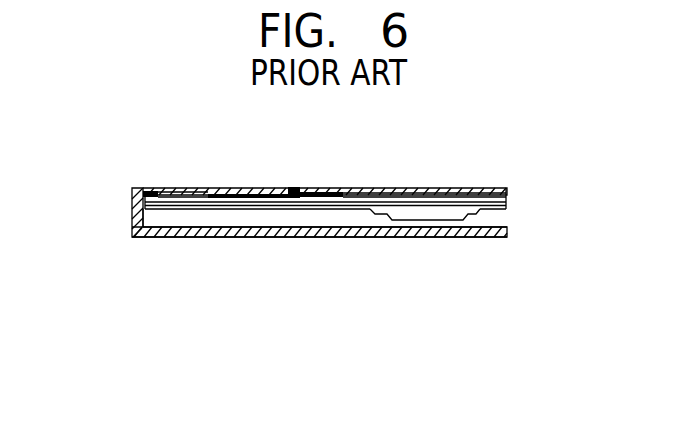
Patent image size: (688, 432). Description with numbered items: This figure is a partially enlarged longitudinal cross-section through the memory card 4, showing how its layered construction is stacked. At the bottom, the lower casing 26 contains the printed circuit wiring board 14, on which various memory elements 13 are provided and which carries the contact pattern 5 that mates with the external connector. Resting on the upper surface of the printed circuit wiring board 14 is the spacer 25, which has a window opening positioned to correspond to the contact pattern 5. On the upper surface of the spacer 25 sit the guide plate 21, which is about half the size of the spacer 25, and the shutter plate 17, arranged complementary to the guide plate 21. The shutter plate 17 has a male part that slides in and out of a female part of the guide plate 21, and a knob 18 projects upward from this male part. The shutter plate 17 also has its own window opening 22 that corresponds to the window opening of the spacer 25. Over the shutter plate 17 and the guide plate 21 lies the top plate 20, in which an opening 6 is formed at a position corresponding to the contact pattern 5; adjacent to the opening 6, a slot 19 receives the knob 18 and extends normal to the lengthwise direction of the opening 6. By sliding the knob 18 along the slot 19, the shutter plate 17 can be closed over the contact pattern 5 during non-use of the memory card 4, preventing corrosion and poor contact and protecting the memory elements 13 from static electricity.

The memory card 4 is at (126, 221).
The contact pattern 5 is at (258, 203).
The opening 6 is at (252, 190).
The memory elements 13 is at (424, 213).
The printed circuit wiring board 14 is at (506, 206).
The shutter plate 17 is at (236, 190).
The knob 18 is at (291, 187).
The slot 19 is at (305, 181).
The top plate 20 is at (152, 190).
The guide plate 21 is at (506, 196).
The window opening 22 is at (180, 189).
The spacer 25 is at (506, 201).
The lower casing 26 is at (183, 231).